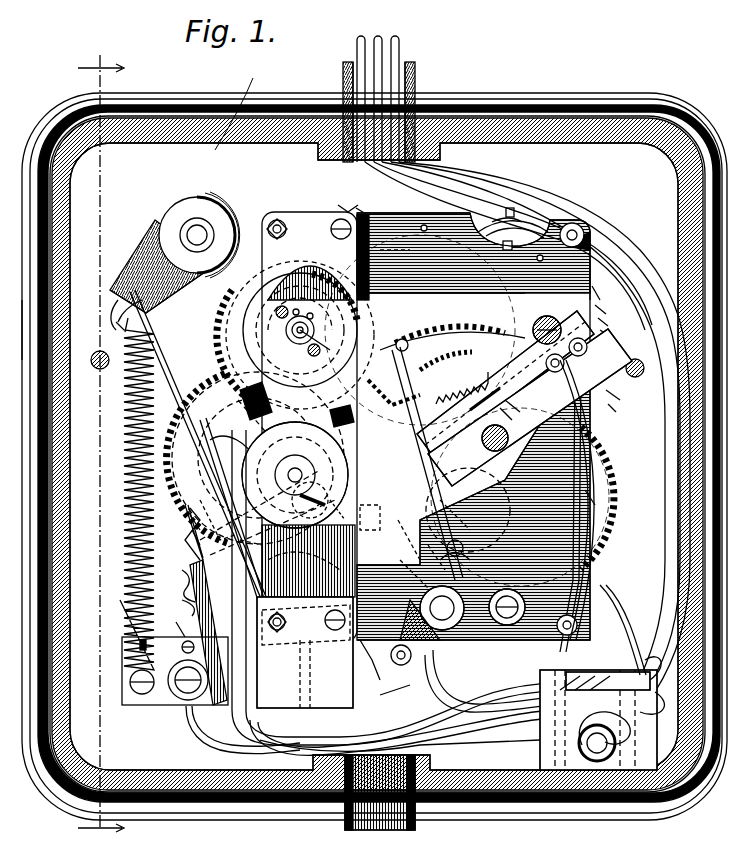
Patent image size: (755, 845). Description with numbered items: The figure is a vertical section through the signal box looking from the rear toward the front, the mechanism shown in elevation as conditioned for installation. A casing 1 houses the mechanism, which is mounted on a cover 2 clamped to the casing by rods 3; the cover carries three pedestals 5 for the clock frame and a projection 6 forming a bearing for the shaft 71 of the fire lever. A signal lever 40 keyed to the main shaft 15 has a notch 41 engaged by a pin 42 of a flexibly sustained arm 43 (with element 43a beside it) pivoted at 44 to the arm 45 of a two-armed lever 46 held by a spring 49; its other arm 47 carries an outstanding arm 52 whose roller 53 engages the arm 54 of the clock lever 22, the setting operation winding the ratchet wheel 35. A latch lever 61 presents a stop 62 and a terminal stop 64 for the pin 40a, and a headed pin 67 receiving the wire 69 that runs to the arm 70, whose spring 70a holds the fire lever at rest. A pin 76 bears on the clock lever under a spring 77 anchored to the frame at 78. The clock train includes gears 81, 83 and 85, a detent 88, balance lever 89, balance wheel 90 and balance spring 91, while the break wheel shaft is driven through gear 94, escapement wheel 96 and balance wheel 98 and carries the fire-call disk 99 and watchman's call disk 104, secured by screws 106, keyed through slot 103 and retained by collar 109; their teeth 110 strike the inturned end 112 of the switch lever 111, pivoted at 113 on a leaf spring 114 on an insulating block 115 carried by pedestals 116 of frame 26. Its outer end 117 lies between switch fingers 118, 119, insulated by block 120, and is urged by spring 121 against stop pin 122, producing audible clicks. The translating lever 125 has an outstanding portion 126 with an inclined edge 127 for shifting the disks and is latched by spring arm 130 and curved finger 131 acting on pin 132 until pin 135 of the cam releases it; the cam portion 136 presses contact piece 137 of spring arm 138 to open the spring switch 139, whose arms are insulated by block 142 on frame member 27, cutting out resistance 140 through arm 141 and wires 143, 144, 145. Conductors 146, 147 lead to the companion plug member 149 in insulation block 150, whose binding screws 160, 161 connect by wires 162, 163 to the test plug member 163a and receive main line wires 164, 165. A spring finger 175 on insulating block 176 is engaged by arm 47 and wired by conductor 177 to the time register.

The casing 1 is at (42, 332).
The cover 2 is at (374, 441).
The bolts or rods 3 is at (634, 360).
The pedestals 5 is at (305, 262).
The projection 6 is at (215, 212).
The main shaft 15 is at (284, 482).
The clock lever 22 is at (176, 630).
The frame 26 is at (590, 275).
The frame member 27 is at (302, 212).
The ratchet wheel 35 is at (190, 378).
The signal lever 40 is at (185, 550).
The pin 40a is at (252, 538).
The notch 41 is at (182, 577).
The pin 42 is at (400, 568).
The flexibly sustained arm 43 is at (462, 543).
The pin 43a is at (428, 553).
The pivot 44 is at (480, 500).
The arm 45 is at (470, 522).
The two-armed lever 46 is at (404, 545).
The arm 47 is at (375, 666).
The spring 49 is at (268, 322).
The outstanding arm 52 is at (412, 655).
The roller 53 is at (390, 690).
The arm 54 is at (180, 606).
The latch lever 61 is at (292, 622).
The outstanding stop 62 is at (292, 670).
The terminal stop 64 is at (205, 510).
The headed pin 67 is at (270, 566).
The wire 69 is at (158, 336).
The arm 70 is at (140, 266).
The spring 70a is at (140, 412).
The shaft 71 is at (186, 236).
The pin 76 is at (460, 462).
The spring 77 is at (405, 261).
The frame attachment point 78 is at (392, 216).
The gear 81 is at (478, 340).
The gear 83 is at (600, 518).
The gear 85 is at (612, 470).
The detent 88 is at (598, 293).
The balance lever 89 is at (603, 322).
The balance wheel 90 is at (532, 212).
The balance spring 91 is at (515, 208).
The gear 94 is at (242, 305).
The escapement wheel 96 is at (345, 206).
The balance wheel 98 is at (495, 219).
The fire-call disk 99 is at (296, 342).
The slot 103 is at (302, 303).
The watchman's call disk 104 is at (312, 314).
The screws 106 is at (312, 356).
The washer or collar 109 is at (280, 318).
The teeth 110 is at (330, 330).
The circuit making and breaking lever 111 is at (406, 333).
The inturned end 112 is at (352, 292).
The pivot 113 is at (440, 333).
The leaf spring 114 is at (470, 352).
The insulating block 115 is at (518, 406).
The pedestals 116 is at (602, 312).
The outer end 117 is at (480, 400).
The switch finger 118 is at (508, 412).
The switch finger 119 is at (606, 334).
The insulating block 120 is at (552, 366).
The spring 121 is at (532, 335).
The stop pin 122 is at (464, 388).
The translating lever 125 is at (386, 518).
The outstanding portion 126 is at (240, 410).
The inclined edge 127 is at (252, 388).
The spring arm 130 is at (398, 400).
The curved finger 131 is at (256, 445).
The pin 132 is at (364, 414).
The pin 135 is at (300, 512).
The periphery portion 136 is at (335, 512).
The contact piece 137 is at (256, 428).
The spring arm 138 is at (190, 522).
The spring switch 139 is at (262, 688).
The resistance coil 140 is at (462, 560).
The arm 141 is at (252, 658).
The insulating block 142 is at (262, 672).
The wire 143 is at (478, 745).
The wire 144 is at (398, 692).
The wire 145 is at (590, 497).
The conductor 146 is at (614, 406).
The conductor 147 is at (615, 394).
The companion plug member 149 is at (598, 758).
The block of insulation 150 is at (542, 746).
The binding screw 160 is at (562, 640).
The binding screw 161 is at (630, 668).
The wire 162 is at (504, 700).
The wire 163 is at (476, 712).
The test plug member 163a is at (412, 824).
The main line wire 164 is at (628, 622).
The main line wire 165 is at (626, 638).
The spring finger 175 is at (192, 534).
The insulating block 176 is at (126, 660).
The conducting wire 177 is at (358, 62).